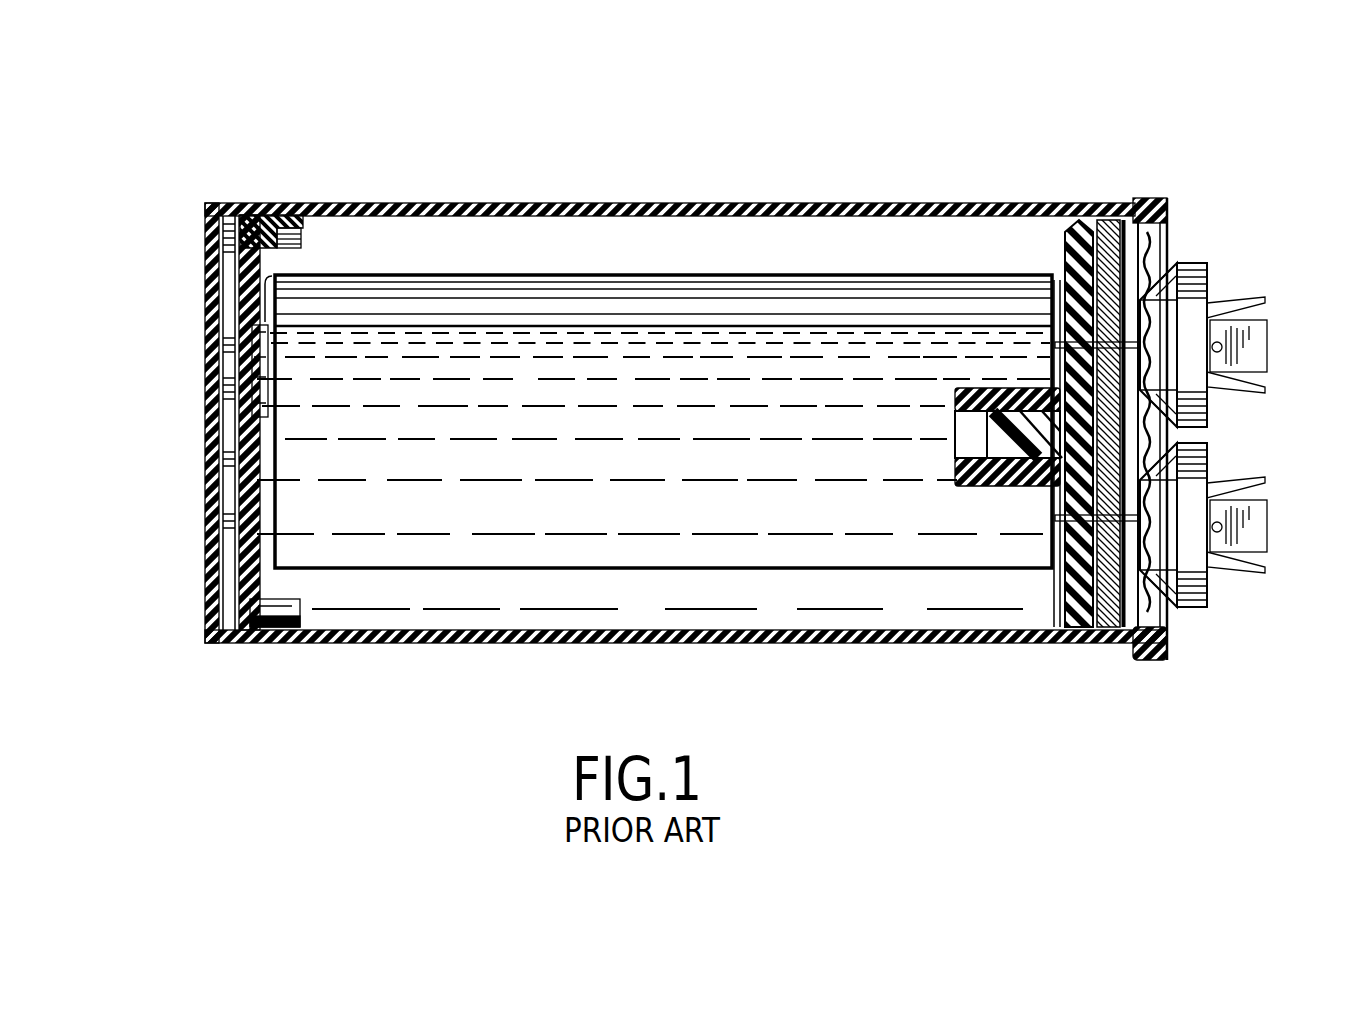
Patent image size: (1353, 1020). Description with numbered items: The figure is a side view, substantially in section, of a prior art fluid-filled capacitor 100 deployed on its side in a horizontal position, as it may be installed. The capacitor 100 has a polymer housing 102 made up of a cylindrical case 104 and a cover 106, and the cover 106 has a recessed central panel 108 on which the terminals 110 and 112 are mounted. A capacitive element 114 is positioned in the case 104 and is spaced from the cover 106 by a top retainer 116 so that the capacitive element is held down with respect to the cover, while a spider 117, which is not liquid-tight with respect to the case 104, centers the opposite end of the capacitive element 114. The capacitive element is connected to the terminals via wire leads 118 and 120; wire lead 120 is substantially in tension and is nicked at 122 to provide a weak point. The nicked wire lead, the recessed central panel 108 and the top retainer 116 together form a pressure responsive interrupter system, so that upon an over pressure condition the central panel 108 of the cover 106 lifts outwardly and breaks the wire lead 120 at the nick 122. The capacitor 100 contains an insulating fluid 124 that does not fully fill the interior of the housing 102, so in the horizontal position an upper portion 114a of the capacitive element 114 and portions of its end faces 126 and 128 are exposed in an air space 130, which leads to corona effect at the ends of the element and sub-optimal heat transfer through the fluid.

The capacitor 100 is at (241, 105).
The polymer housing 102 is at (618, 206).
The cylindrical case 104 is at (510, 204).
The cover 106 is at (1172, 290).
The recessed central panel 108 is at (1165, 450).
The terminal 110 is at (1268, 522).
The terminal 112 is at (1225, 305).
The capacitive element 114 is at (378, 568).
The upper portion of the capacitive element 114a is at (395, 274).
The top retainer 116 is at (1068, 272).
The spider 117 is at (283, 600).
The wire lead 118 is at (1108, 275).
The wire lead 120 is at (1065, 537).
The nick 122 is at (1102, 520).
The insulating fluid 124 is at (262, 322).
The end face 126 is at (1058, 280).
The end face 128 is at (258, 441).
The air space 130 is at (657, 263).